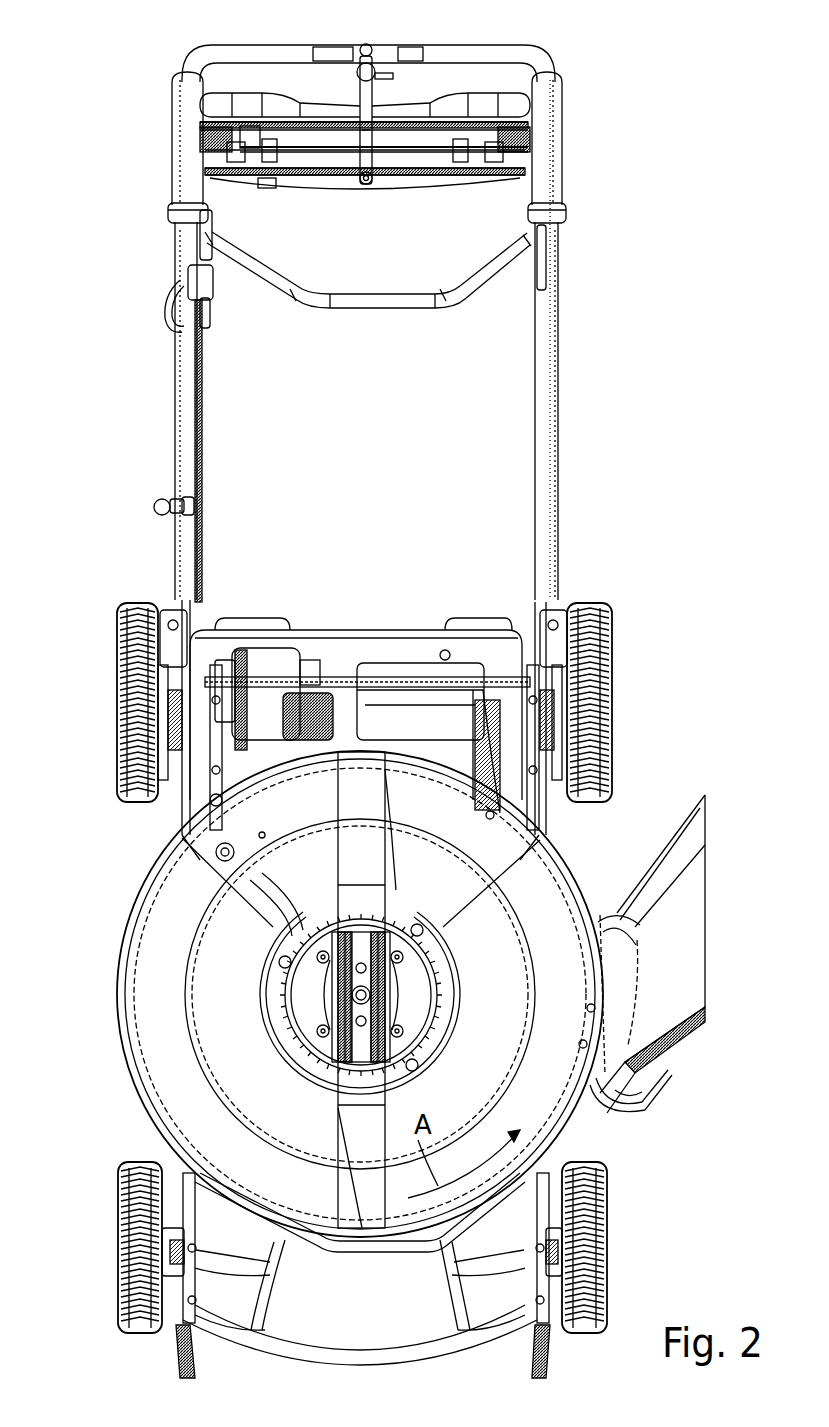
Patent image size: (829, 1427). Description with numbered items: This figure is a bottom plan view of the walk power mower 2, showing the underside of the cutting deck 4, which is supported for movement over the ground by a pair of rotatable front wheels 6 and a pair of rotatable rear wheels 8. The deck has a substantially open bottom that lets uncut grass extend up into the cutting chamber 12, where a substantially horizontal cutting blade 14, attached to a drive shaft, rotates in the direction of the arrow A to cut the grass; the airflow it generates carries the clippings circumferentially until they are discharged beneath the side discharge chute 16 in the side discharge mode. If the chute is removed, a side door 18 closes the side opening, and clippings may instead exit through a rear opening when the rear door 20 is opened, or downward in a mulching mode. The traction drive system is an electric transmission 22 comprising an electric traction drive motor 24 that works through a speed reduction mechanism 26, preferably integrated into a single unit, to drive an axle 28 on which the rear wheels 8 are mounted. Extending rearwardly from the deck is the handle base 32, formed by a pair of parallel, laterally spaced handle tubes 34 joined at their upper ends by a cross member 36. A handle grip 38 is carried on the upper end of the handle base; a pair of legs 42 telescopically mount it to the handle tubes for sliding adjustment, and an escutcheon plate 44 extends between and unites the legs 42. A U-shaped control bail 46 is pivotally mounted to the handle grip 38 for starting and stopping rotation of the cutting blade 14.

The walk power mower 2 is at (686, 398).
The cutting deck 4 is at (117, 962).
The front wheels 6 is at (117, 1225).
The rear wheels 8 is at (115, 692).
The cutting chamber 12 is at (203, 1078).
The cutting blade 14 is at (358, 1087).
The side discharge chute 16 is at (665, 967).
The side door 18 is at (632, 1093).
The rear door 20 is at (402, 612).
The electric transmission 22 is at (285, 637).
The electric traction drive motor 24 is at (190, 797).
The speed reduction mechanism 26 is at (120, 737).
The axle 28 is at (336, 677).
The handle base 32 is at (565, 412).
The handle tubes 34 is at (185, 428).
The cross member 36 is at (442, 53).
The handle grip 38 is at (332, 100).
The legs 42 is at (172, 143).
The escutcheon plate 44 is at (303, 150).
The control bail 46 is at (382, 310).